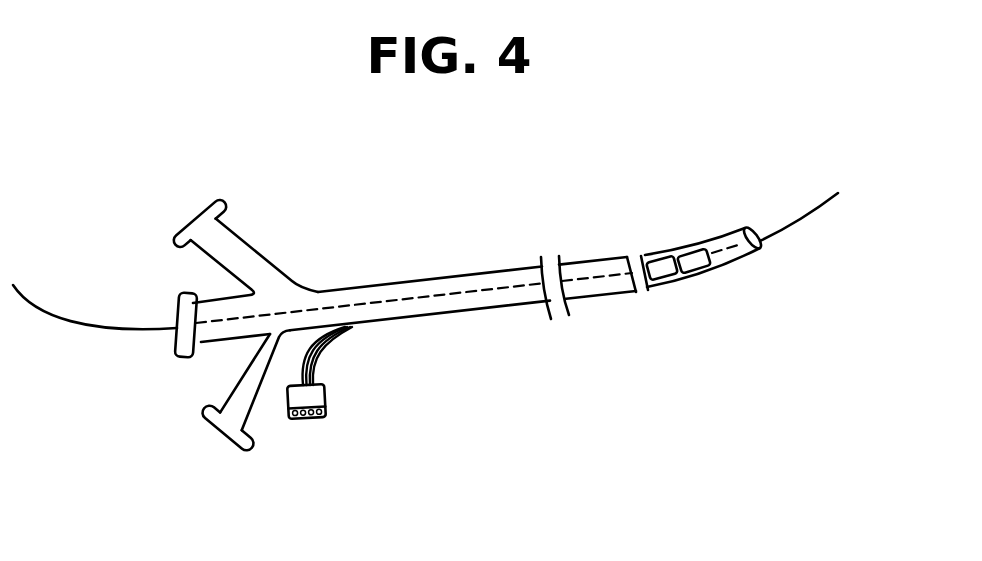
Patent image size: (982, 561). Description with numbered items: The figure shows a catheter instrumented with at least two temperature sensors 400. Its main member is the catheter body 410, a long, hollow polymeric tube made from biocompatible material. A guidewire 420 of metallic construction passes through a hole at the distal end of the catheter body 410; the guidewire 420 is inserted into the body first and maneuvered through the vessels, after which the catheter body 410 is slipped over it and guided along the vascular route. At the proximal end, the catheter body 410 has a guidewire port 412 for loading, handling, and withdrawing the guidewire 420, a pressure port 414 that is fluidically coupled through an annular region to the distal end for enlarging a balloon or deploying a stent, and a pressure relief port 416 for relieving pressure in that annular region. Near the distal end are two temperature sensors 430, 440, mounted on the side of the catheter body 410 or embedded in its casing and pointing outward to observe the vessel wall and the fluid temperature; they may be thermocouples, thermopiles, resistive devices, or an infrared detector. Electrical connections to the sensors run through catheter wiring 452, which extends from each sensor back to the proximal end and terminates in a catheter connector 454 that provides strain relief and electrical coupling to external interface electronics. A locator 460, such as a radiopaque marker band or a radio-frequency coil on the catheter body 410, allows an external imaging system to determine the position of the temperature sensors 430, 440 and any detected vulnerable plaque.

The catheter instrumented with at least two temperature sensors 400 is at (129, 189).
The catheter body 410 is at (405, 282).
The guidewire port 412 is at (178, 349).
The pressure port 414 is at (267, 257).
The pressure relief port 416 is at (265, 405).
The guidewire 420 is at (790, 222).
The temperature sensor 430 is at (703, 273).
The temperature sensor 440 is at (668, 279).
The catheter wiring 452 is at (312, 355).
The catheter connector 454 is at (328, 397).
The locator 460 is at (630, 257).